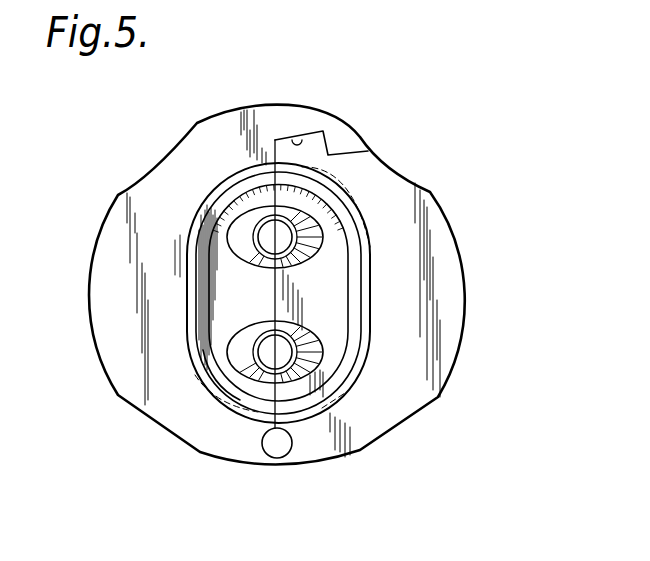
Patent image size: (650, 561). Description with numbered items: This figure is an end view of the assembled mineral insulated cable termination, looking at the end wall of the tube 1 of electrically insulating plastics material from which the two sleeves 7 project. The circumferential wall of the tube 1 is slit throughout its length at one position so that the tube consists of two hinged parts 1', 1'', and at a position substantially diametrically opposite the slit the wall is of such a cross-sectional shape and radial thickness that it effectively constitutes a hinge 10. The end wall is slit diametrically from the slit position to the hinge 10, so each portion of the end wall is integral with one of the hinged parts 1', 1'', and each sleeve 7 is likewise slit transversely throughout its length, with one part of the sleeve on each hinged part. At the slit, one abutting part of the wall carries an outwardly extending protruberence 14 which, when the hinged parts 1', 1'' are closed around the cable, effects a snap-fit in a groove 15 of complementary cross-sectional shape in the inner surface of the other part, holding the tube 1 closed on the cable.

The tube 1 is at (304, 285).
The hinged part 1' is at (89, 299).
The hinged part 1'' is at (425, 290).
The sleeve 7 is at (257, 360).
The hinge 10 is at (281, 467).
The protruberence 14 is at (310, 150).
The groove 15 is at (297, 138).